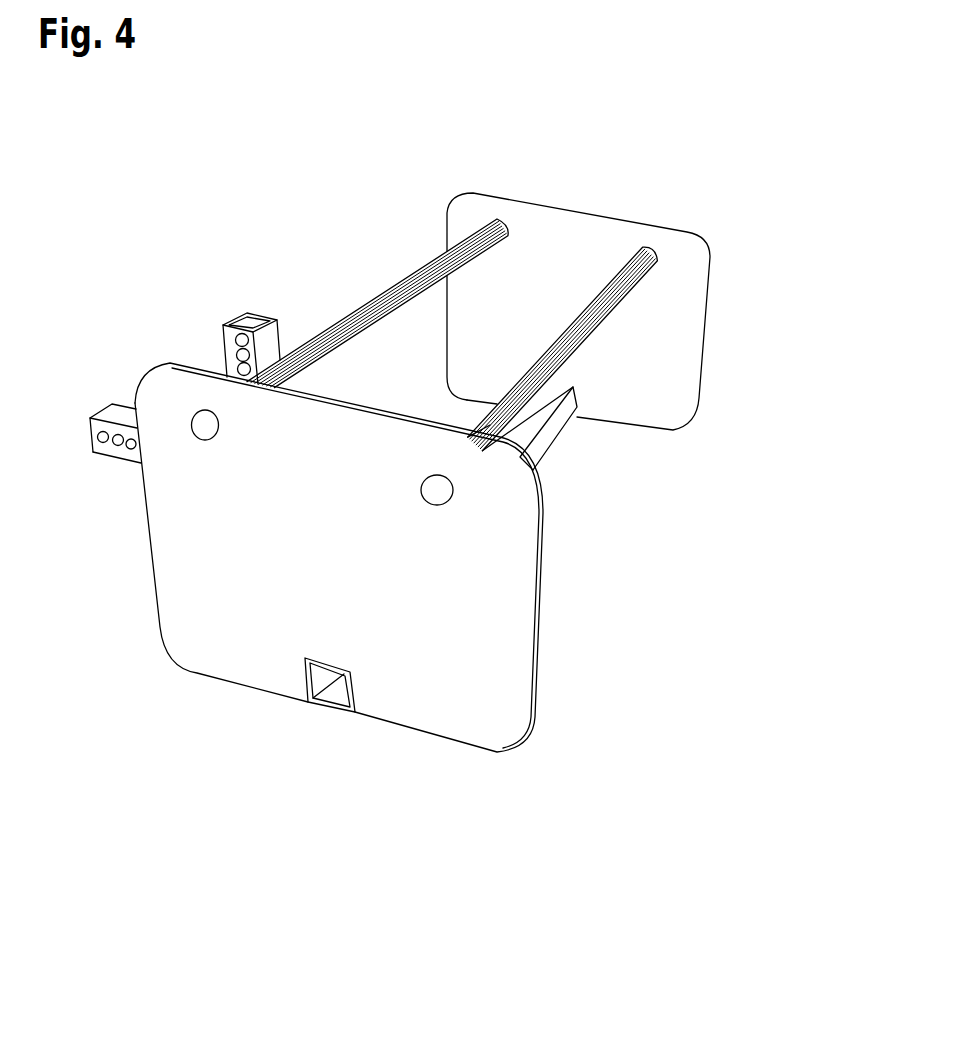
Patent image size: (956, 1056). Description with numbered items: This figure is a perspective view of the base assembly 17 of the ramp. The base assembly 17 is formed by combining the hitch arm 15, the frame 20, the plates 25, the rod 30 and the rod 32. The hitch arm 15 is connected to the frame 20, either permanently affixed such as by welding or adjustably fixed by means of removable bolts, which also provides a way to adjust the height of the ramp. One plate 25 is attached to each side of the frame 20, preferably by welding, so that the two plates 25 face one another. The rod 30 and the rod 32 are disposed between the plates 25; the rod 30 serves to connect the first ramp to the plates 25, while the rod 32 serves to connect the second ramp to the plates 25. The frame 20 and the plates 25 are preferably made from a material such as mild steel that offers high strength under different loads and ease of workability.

The hitch arm 15 is at (113, 450).
The base assembly 17 is at (328, 798).
The frame 20 is at (552, 450).
The plates 25 is at (688, 310).
The rod 30 is at (323, 328).
The rod 32 is at (617, 267).